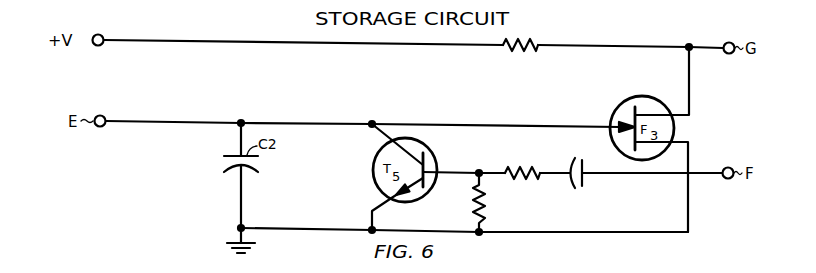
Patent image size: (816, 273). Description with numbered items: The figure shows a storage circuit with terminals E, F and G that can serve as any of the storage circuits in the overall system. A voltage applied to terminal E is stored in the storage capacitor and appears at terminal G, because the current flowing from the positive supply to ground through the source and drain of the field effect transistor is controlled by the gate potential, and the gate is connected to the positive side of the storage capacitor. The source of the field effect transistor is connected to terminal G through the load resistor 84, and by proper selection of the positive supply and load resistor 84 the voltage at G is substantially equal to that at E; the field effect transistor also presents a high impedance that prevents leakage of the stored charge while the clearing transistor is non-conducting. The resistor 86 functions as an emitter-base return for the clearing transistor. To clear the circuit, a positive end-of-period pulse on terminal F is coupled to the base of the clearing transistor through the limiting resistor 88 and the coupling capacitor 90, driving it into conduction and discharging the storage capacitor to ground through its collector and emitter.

The load resistor 84 is at (521, 52).
The resistor 86 is at (485, 207).
The limiting resistor 88 is at (522, 167).
The coupling capacitor 90 is at (584, 182).